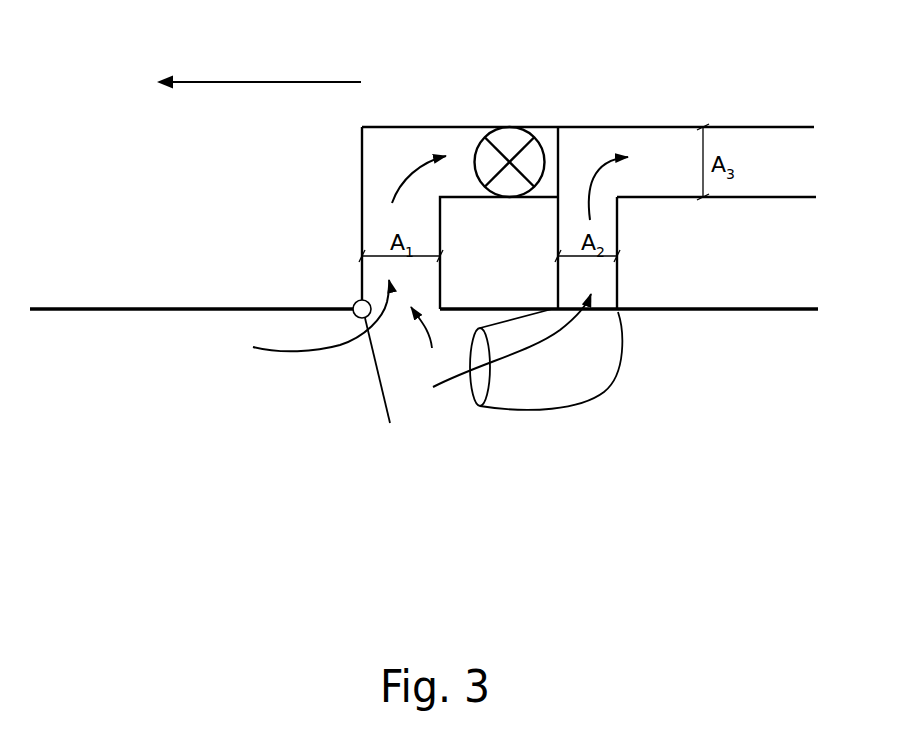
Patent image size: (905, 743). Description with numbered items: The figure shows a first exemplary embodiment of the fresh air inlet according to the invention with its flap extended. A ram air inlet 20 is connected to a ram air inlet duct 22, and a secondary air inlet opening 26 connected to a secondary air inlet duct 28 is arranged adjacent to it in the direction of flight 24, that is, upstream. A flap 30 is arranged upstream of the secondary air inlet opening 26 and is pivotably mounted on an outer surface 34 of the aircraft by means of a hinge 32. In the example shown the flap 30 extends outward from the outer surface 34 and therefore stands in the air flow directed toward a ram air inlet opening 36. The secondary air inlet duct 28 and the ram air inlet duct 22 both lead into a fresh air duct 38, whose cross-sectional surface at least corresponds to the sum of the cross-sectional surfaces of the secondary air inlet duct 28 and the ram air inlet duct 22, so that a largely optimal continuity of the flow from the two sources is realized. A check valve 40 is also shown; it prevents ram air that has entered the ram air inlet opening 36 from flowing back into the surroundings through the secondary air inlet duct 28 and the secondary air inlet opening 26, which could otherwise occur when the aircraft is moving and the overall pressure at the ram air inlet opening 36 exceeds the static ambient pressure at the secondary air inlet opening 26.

The ram air inlet 20 is at (592, 375).
The ram air inlet duct 22 is at (612, 282).
The direction of flight 24 is at (338, 80).
The secondary air inlet opening 26 is at (429, 342).
The secondary air inlet duct 28 is at (385, 163).
The flap 30 is at (378, 393).
The hinge 32 is at (353, 303).
The outer surface 34 is at (125, 312).
The ram air inlet opening 36 is at (480, 392).
The fresh air duct 38 is at (748, 135).
The check valve 40 is at (508, 135).